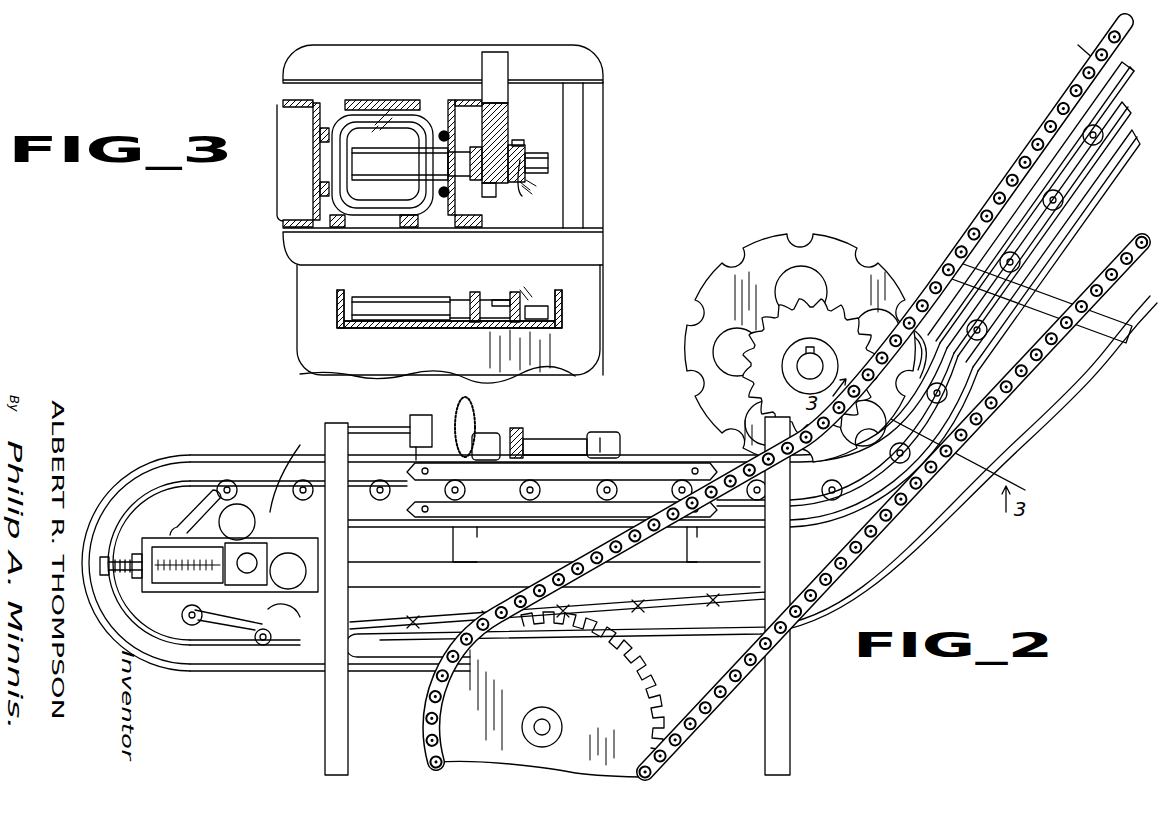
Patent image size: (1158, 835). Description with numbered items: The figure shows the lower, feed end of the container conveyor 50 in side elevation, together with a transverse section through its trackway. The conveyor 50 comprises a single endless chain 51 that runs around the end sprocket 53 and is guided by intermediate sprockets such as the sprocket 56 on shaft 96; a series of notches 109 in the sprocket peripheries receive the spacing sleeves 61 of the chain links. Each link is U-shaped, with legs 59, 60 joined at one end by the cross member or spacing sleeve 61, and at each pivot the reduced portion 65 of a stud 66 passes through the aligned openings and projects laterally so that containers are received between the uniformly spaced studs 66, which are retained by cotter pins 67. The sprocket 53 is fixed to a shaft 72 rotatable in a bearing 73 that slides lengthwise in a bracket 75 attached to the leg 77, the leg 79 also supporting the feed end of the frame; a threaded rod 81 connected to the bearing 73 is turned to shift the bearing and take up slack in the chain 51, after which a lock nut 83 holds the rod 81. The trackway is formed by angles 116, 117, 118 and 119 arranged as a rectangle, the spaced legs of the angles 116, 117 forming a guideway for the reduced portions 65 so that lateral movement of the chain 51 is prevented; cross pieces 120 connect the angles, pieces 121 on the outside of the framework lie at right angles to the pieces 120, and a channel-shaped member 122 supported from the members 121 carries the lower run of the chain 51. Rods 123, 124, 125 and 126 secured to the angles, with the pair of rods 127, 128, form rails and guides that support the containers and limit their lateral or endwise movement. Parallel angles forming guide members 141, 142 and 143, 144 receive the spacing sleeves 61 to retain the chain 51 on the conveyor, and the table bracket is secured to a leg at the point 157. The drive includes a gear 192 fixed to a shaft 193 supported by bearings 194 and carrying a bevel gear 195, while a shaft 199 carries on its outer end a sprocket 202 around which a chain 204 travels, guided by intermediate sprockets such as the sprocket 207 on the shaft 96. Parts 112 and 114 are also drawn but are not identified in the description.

In FIG. 2, the conveyor 50 is at (1075, 170).
In FIG. 3, the endless chain 51 is at (522, 190).
In FIG. 2, the endless chain 51 is at (1105, 280).
In FIG. 2, the end sprocket 53 is at (286, 474).
In FIG. 3, the intermediate sprocket 56 is at (508, 66).
In FIG. 2, the intermediate sprocket 56 is at (762, 255).
In FIG. 3, the side member or leg 59 is at (470, 149).
In FIG. 3, the side member or leg 60 is at (522, 147).
In FIG. 3, the cross member or spacing sleeve 61 is at (518, 140).
In FIG. 3, the reduced portion of stud 65 is at (548, 162).
In FIG. 2, the reduced portion of stud 65 is at (255, 645).
In FIG. 3, the stud or pin 66 is at (390, 170).
In FIG. 3, the cotter pin 67 is at (530, 188).
In FIG. 2, the cotter pin 67 is at (228, 481).
In FIG. 2, the shaft 72 is at (250, 556).
In FIG. 2, the bearing 73 is at (275, 580).
In FIG. 2, the bracket 75 is at (165, 592).
In FIG. 2, the leg 77 is at (325, 762).
In FIG. 2, the leg 79 is at (790, 757).
In FIG. 2, the threaded rod 81 is at (128, 576).
In FIG. 2, the lock nut 83 is at (137, 552).
In FIG. 2, the shaft 96 is at (805, 366).
In FIG. 2, the notch 109 is at (730, 278).
In FIG. 2, the rail 112 is at (1105, 175).
In FIG. 2, the lower track 114 is at (410, 510).
In FIG. 3, the angle 116 is at (452, 98).
In FIG. 2, the angle 116 is at (945, 348).
In FIG. 3, the angle 117 is at (472, 230).
In FIG. 2, the angle 117 is at (970, 375).
In FIG. 3, the angle 118 is at (283, 102).
In FIG. 3, the angle 119 is at (283, 224).
In FIG. 3, the cross piece 120 is at (430, 57).
In FIG. 2, the cross piece 120 is at (1090, 55).
In FIG. 3, the connecting piece 121 is at (600, 200).
In FIG. 2, the connecting piece 121 is at (1035, 318).
In FIG. 3, the channel-shaped member 122 is at (410, 368).
In FIG. 2, the channel-shaped member 122 is at (1035, 398).
In FIG. 3, the guide rod 123 is at (443, 130).
In FIG. 3, the guide rod 124 is at (444, 198).
In FIG. 3, the guide rod 125 is at (320, 134).
In FIG. 3, the guide rod 126 is at (320, 189).
In FIG. 3, the support rod 127 is at (408, 230).
In FIG. 3, the support rod 128 is at (338, 230).
In FIG. 2, the guide member 141 is at (1045, 172).
In FIG. 2, the guide member 142 is at (1065, 220).
In FIG. 2, the guide member 143 is at (650, 462).
In FIG. 2, the guide member 144 is at (635, 518).
In FIG. 2, the bracket attachment 157 is at (405, 427).
In FIG. 2, the gear 192 is at (470, 410).
In FIG. 2, the shaft 193 is at (560, 438).
In FIG. 2, the bearing 194 is at (486, 433).
In FIG. 2, the bevel gear 195 is at (518, 432).
In FIG. 2, the shaft 199 is at (548, 725).
In FIG. 2, the sprocket 202 is at (650, 652).
In FIG. 2, the chain 204 is at (712, 706).
In FIG. 2, the intermediate sprocket 207 is at (815, 342).